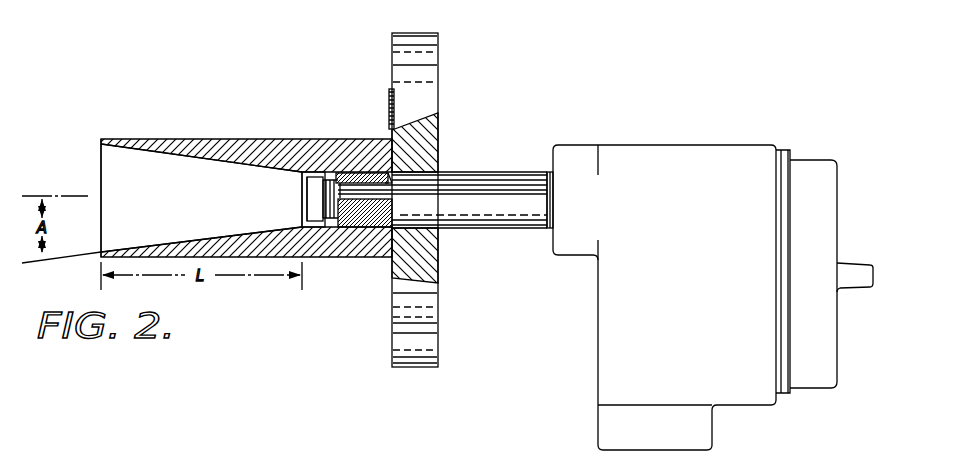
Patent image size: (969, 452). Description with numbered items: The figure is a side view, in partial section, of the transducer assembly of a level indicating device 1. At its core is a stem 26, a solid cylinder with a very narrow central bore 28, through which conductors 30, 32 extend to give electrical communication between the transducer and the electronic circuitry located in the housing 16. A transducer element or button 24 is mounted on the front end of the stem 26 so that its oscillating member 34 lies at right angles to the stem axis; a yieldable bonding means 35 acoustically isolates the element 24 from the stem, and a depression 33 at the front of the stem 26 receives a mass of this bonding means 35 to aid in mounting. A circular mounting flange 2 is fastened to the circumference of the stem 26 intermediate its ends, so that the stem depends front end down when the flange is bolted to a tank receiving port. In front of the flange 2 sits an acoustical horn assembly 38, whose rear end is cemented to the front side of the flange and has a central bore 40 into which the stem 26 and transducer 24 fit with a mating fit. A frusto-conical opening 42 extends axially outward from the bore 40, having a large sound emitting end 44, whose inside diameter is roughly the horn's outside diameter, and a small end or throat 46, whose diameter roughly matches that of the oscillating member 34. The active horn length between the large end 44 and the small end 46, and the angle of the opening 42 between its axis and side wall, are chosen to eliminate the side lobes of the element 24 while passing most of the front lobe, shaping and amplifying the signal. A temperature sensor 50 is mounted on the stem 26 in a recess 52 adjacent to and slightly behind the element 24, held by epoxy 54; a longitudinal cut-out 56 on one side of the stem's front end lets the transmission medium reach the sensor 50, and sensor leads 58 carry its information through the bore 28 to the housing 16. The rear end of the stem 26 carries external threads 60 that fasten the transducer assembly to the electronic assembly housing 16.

The device 1 is at (578, 105).
The circular mounting flange 2 is at (440, 91).
The housing 16 is at (673, 145).
The transducer element 24 is at (315, 171).
The stem 26 is at (492, 217).
The central bore 28 is at (392, 201).
The conductor 30 is at (329, 218).
The conductor 32 is at (335, 218).
The depression 33 is at (324, 218).
The oscillating member 34 is at (302, 196).
The yieldable bonding means 35 is at (325, 178).
The acoustical horn assembly 38 is at (204, 133).
The central bore 40 is at (304, 172).
The frusto-conical opening 42 is at (156, 152).
The large end 44 is at (101, 160).
The small end 46 is at (302, 219).
The temperature sensor 50 is at (356, 175).
The recess 52 is at (398, 171).
The epoxy 54 is at (368, 175).
The longitudinal cut-out 56 is at (343, 175).
The sensor leads 58 is at (390, 180).
The external threads 60 is at (547, 228).